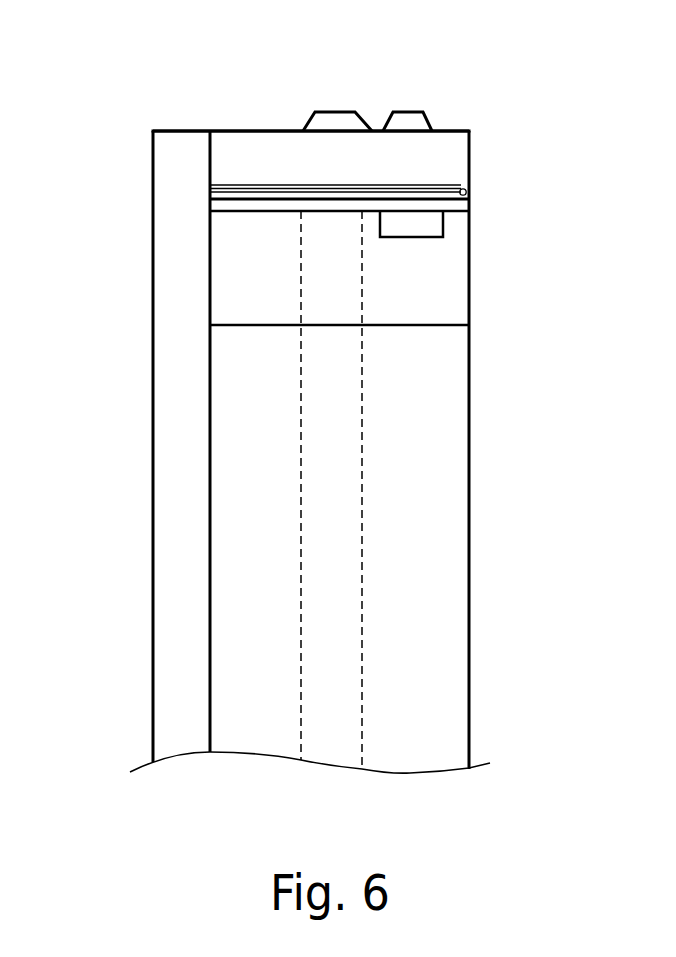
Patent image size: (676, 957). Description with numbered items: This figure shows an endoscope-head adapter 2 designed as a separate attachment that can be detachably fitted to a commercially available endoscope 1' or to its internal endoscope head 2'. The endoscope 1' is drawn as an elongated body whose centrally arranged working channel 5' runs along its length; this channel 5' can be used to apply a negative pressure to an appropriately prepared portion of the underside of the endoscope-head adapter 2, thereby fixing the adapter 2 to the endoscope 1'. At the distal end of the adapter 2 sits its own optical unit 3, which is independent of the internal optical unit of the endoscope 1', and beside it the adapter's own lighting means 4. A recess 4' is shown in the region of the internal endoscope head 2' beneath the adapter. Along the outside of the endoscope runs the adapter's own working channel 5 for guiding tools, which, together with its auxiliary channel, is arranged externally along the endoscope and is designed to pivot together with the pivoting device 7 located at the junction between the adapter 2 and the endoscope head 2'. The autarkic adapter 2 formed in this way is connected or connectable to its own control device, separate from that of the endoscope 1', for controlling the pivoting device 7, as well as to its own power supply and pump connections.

The endoscope 1' is at (355, 452).
The endoscope-head adapter 2 is at (391, 176).
The internal endoscope head 2' is at (395, 259).
The optical unit 3 is at (325, 115).
The lighting means 4 is at (409, 74).
The recess 4' is at (480, 233).
The working channel 5 is at (124, 446).
The working channel 5' is at (440, 490).
The pivoting device 7 is at (466, 192).